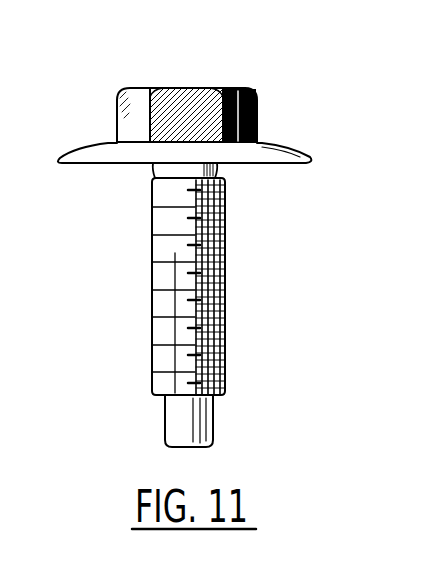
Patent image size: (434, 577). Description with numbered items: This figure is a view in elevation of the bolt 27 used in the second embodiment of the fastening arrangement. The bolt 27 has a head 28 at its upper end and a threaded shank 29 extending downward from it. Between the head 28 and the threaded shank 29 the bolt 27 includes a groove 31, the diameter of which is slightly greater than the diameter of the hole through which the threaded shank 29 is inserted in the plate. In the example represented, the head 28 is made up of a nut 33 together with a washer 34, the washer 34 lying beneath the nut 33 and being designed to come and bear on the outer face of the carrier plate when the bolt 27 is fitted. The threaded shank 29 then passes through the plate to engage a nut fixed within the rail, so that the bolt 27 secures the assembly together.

The bolt 27 is at (262, 118).
The head 28 is at (110, 120).
The threaded shank 29 is at (226, 321).
The groove 31 is at (219, 168).
The nut 33 is at (148, 92).
The washer 34 is at (291, 146).